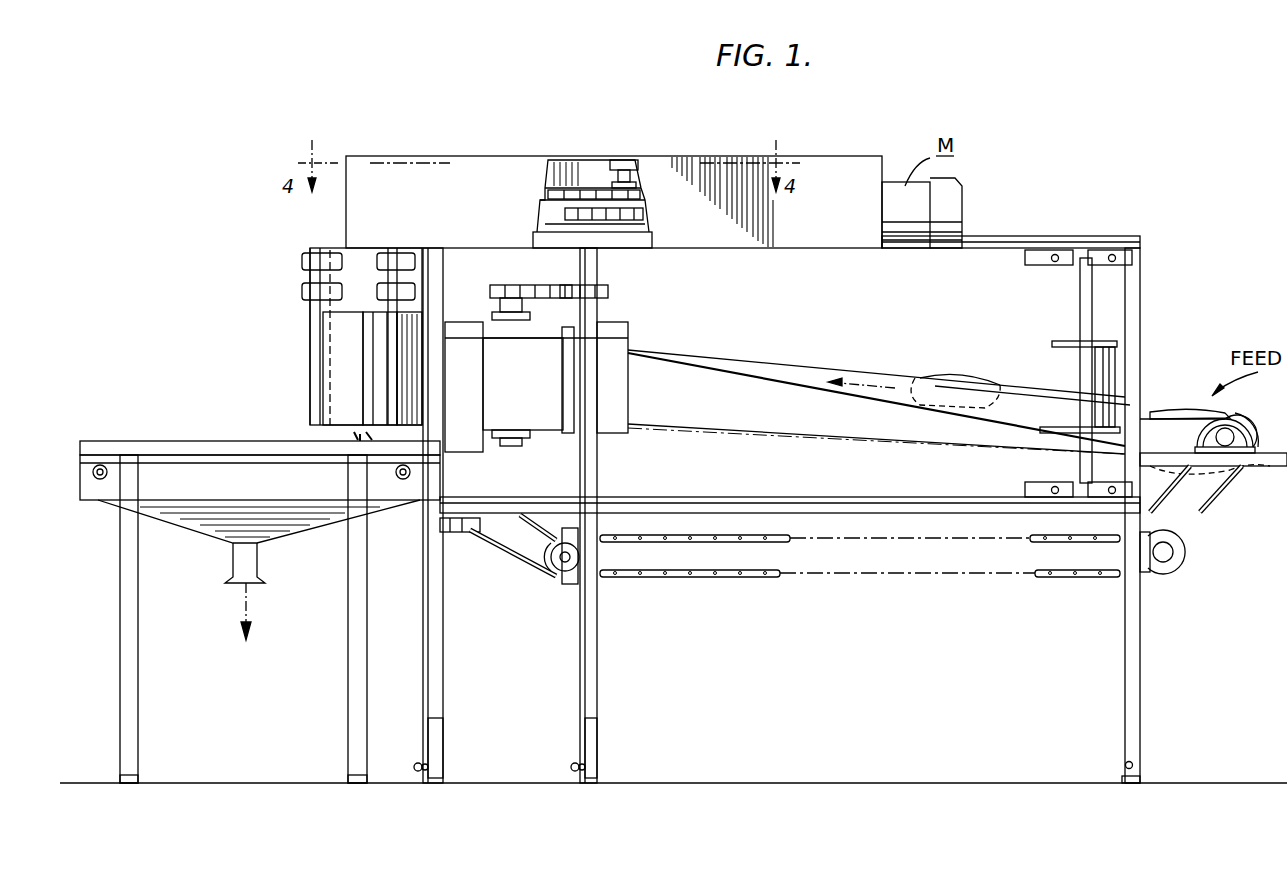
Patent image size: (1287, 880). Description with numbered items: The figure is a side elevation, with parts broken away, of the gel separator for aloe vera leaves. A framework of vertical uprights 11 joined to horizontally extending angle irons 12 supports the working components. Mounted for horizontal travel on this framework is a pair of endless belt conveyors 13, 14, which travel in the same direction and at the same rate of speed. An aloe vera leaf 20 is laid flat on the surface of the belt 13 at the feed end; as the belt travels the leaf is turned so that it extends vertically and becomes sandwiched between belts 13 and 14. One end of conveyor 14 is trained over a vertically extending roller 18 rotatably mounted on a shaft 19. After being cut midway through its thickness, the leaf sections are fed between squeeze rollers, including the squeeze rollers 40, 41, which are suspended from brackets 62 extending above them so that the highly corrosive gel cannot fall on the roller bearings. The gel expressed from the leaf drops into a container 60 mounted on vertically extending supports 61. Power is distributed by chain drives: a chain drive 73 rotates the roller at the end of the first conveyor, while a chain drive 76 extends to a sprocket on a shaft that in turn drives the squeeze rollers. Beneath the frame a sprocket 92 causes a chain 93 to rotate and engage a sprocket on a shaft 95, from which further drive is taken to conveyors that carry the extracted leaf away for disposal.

The vertical uprights 11 is at (443, 688).
The horizontally extending angle irons 12 is at (1004, 240).
The endless belt conveyor 13 is at (876, 403).
The endless belt conveyor 14 is at (874, 354).
The vertically extending roller 18 is at (1102, 350).
The shaft 19 is at (1080, 305).
The aloe vera leaf 20 is at (982, 378).
The squeeze roller 40 is at (338, 382).
The squeeze roller 41 is at (406, 385).
The container 60 is at (304, 516).
The vertically extending supports 61 is at (138, 730).
The brackets 62 is at (392, 258).
The chain drive 73 is at (540, 284).
The chain drive 76 is at (574, 182).
The sprocket 92 is at (1172, 565).
The chain 93 is at (762, 578).
The shaft 95 is at (562, 578).